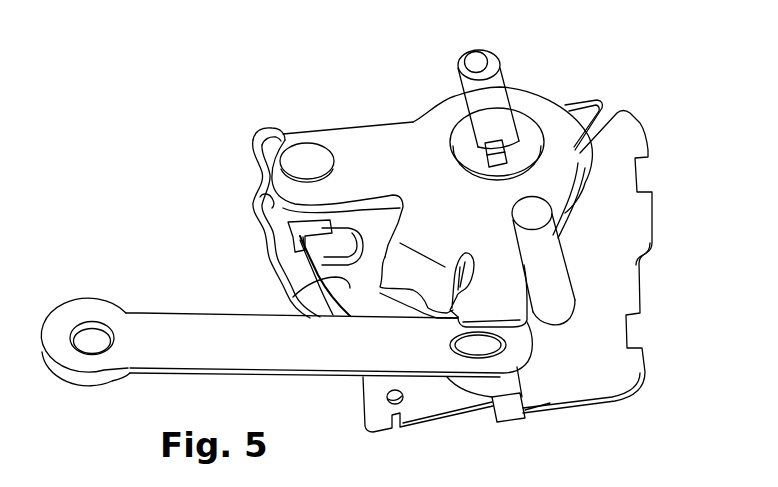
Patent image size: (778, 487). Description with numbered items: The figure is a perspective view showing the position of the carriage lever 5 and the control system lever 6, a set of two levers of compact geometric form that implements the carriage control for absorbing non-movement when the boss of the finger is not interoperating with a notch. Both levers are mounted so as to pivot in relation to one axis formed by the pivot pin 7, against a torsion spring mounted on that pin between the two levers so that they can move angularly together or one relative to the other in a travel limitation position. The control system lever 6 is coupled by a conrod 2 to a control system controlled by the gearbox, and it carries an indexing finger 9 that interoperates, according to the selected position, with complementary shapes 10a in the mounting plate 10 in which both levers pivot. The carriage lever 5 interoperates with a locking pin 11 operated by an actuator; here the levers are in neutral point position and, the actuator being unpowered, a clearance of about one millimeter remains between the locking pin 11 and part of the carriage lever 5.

The conrod 2 is at (205, 342).
The carriage lever 5 is at (388, 155).
The control system lever 6 is at (293, 297).
The pivot pin 7 is at (490, 95).
The indexing finger 9 is at (268, 208).
The mounting plate 10 is at (258, 143).
The complementary shapes 10a is at (272, 128).
The locking pin 11 is at (531, 207).